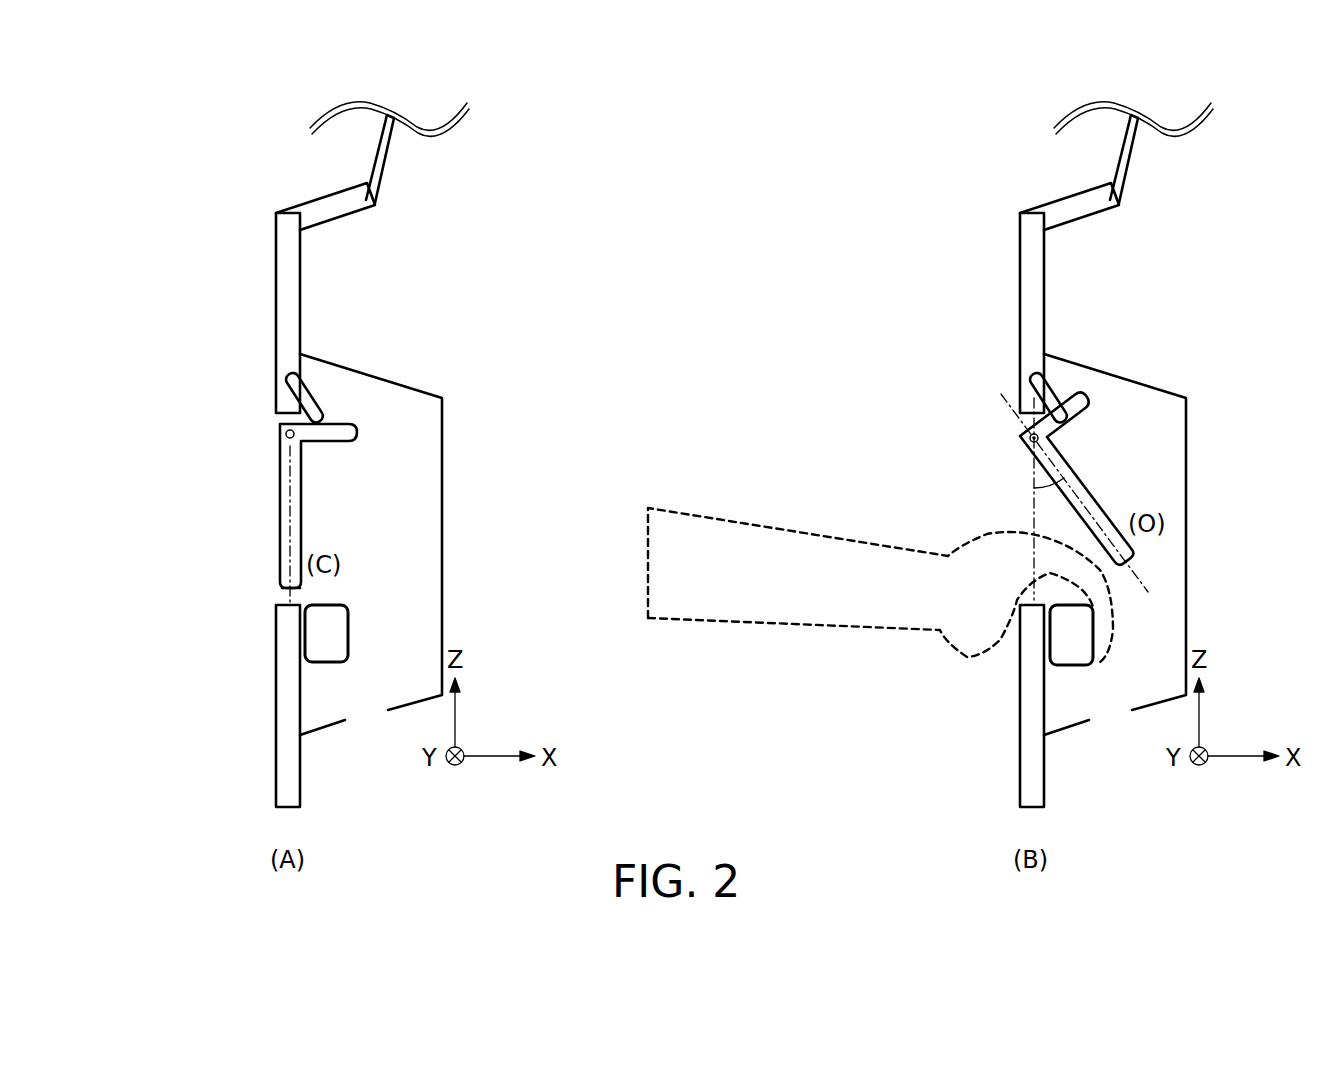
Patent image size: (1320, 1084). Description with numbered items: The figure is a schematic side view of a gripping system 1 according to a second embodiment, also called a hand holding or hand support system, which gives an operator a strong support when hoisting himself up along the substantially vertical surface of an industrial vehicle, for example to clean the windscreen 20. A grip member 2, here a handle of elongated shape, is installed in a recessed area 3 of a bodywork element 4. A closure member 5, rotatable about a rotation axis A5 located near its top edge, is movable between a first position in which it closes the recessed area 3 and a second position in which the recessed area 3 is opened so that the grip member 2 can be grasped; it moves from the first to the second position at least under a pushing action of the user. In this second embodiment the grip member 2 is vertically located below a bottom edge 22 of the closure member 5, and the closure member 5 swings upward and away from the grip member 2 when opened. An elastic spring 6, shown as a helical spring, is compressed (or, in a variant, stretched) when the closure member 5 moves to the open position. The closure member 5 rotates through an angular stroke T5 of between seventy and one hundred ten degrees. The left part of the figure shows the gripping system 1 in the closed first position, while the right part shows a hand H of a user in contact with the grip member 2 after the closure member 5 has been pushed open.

The gripping system 1 is at (180, 407).
The grip member 2 is at (328, 648).
The recessed area 3 is at (410, 600).
The bodywork element 4 is at (289, 710).
The closure member 5 is at (287, 513).
The elastic spring 6 is at (318, 383).
The windscreen 20 is at (392, 150).
The bottom edge 22 is at (292, 587).
The rotation axis A5 is at (286, 434).
The angular stroke T5 is at (1037, 488).
The hand H is at (982, 578).